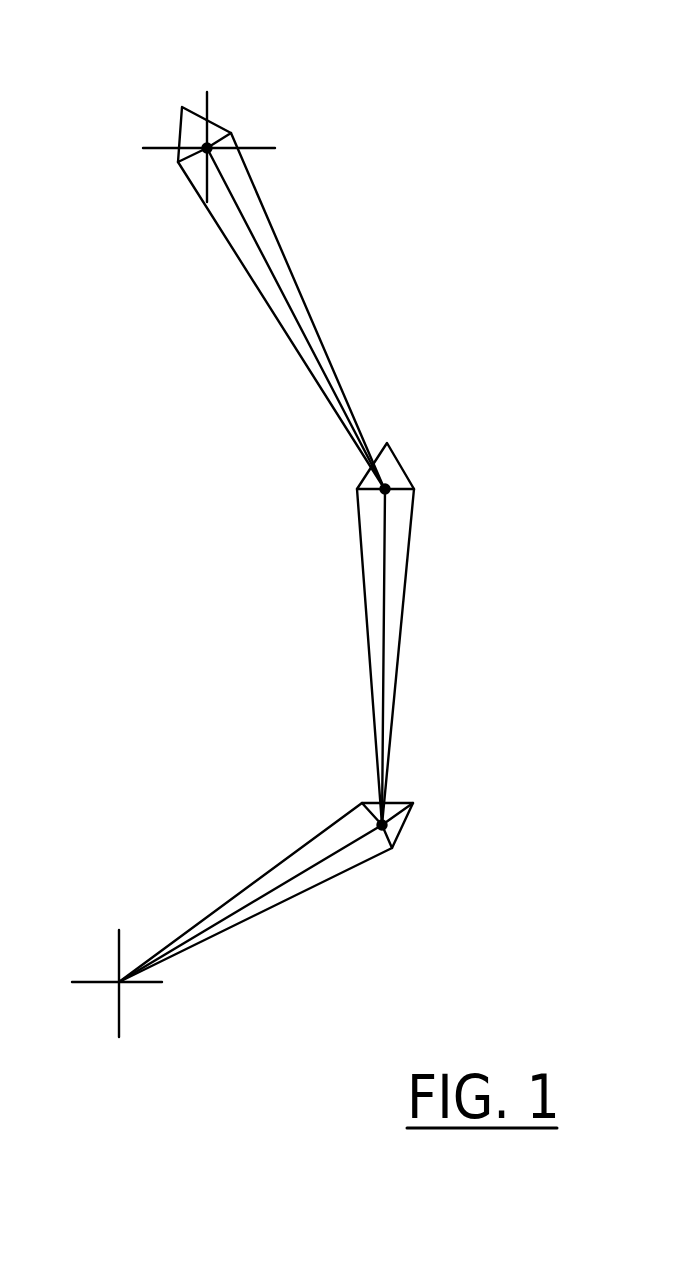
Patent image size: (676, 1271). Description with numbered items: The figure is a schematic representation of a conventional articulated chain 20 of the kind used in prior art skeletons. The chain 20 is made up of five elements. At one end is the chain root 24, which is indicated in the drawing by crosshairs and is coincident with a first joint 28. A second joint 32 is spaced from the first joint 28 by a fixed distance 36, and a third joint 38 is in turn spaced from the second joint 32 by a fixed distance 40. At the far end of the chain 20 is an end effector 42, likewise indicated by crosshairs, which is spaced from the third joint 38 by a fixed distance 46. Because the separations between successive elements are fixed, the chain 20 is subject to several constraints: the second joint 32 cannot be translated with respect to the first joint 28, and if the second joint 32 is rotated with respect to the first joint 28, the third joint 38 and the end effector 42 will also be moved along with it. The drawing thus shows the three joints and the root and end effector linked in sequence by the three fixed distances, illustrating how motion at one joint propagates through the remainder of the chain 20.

The articulated chain 20 is at (464, 330).
The chain root 24 is at (210, 100).
The first joint 28 is at (222, 128).
The second joint 32 is at (388, 487).
The fixed distance 36 is at (300, 308).
The third joint 38 is at (399, 826).
The fixed distance 40 is at (387, 607).
The end effector 42 is at (100, 982).
The fixed distance 46 is at (258, 898).